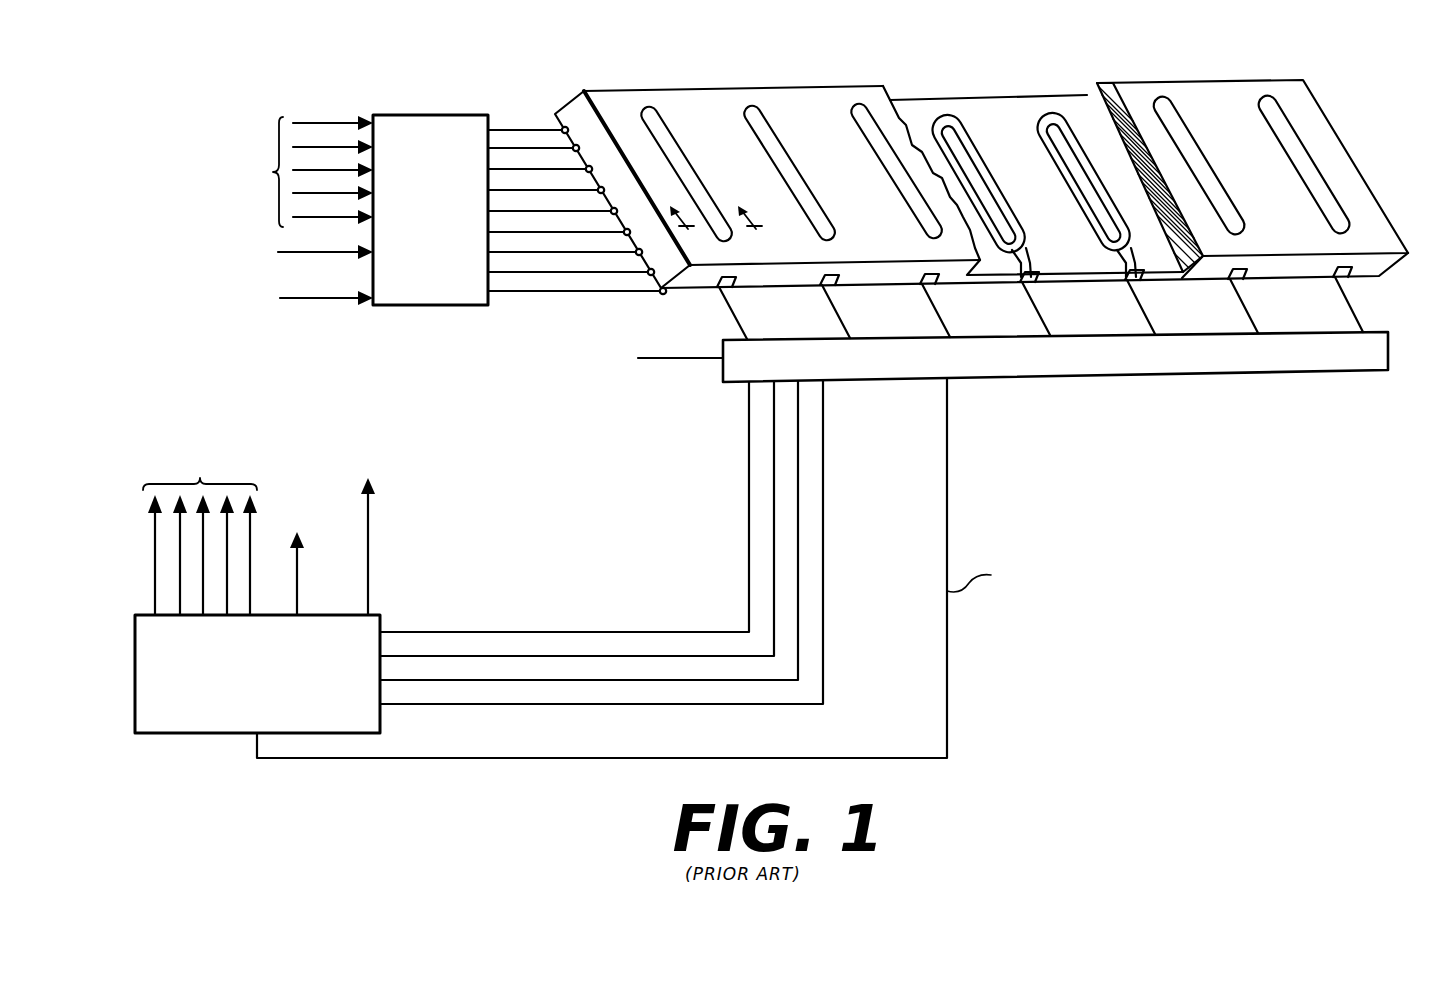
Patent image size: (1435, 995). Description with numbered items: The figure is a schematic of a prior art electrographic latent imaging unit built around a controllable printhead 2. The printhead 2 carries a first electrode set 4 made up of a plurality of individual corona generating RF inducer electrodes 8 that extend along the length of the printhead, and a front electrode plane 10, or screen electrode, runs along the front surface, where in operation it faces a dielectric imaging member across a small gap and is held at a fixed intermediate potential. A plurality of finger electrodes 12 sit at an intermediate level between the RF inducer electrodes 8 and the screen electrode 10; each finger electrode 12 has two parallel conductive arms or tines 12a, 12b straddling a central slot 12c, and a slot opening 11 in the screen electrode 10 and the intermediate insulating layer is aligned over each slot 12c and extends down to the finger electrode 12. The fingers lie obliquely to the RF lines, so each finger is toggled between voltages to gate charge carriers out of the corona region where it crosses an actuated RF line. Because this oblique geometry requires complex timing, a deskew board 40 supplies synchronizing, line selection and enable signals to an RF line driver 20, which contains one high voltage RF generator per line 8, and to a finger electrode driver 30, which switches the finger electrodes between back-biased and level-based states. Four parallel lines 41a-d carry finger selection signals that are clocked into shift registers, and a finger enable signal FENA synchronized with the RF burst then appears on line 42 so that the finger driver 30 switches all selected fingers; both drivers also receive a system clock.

The controllable printhead 2 is at (1254, 57).
The first electrode set 4 is at (595, 298).
The RF inducer electrodes 8 is at (560, 128).
The front electrode plane 10 is at (765, 102).
The slot opening 11 is at (1172, 115).
The finger electrodes 12 is at (961, 123).
The conductive arm 12a is at (1056, 172).
The conductive arm 12b is at (1066, 127).
The central slot 12c is at (1047, 129).
The RF line driver 20 is at (410, 128).
The finger electrode driver 30 is at (1377, 332).
The deskew board 40 is at (350, 661).
The parallel lines 41a-d is at (561, 619).
The finger enable line 42 is at (929, 755).